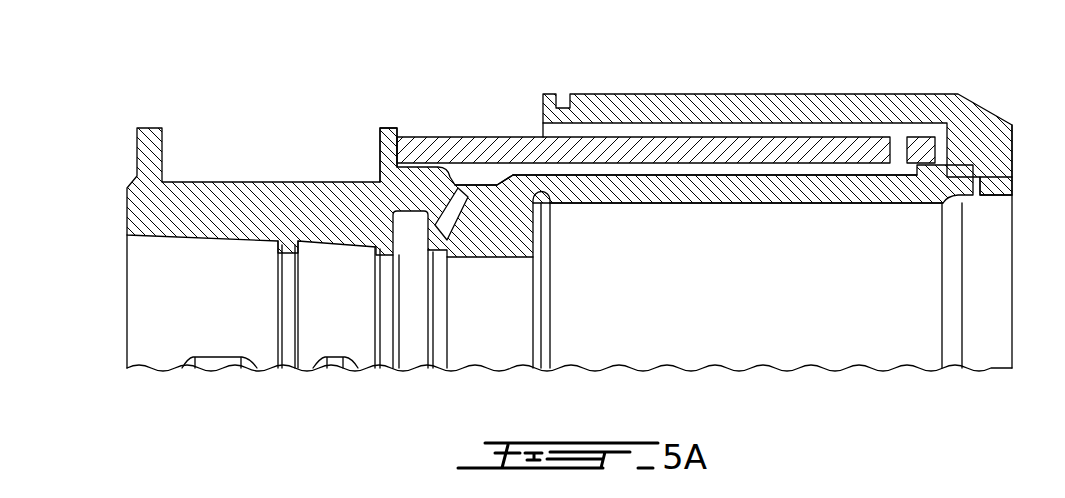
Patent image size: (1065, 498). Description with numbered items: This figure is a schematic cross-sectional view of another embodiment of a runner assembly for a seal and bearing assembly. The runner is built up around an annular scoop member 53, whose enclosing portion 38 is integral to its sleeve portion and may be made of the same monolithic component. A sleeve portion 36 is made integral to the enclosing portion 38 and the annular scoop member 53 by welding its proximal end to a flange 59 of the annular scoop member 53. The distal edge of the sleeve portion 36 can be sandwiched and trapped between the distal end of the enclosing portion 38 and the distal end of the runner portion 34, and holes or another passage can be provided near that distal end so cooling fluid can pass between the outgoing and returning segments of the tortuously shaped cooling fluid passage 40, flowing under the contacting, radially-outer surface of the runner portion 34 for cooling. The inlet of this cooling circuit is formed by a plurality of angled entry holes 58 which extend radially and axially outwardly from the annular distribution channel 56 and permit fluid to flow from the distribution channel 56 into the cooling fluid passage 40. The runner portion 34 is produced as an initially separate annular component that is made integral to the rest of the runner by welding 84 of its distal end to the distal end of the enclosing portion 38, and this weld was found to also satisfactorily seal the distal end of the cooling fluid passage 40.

The runner portion 34 is at (771, 110).
The sleeve portion 36 is at (680, 152).
The enclosing portion 38 is at (618, 189).
The cooling fluid passage 40 is at (480, 175).
The annular scoop member 53 is at (273, 210).
The annular distribution channel 56 is at (381, 255).
The angled entry holes 58 is at (457, 210).
The flange 59 is at (383, 128).
The welding 84 is at (997, 195).